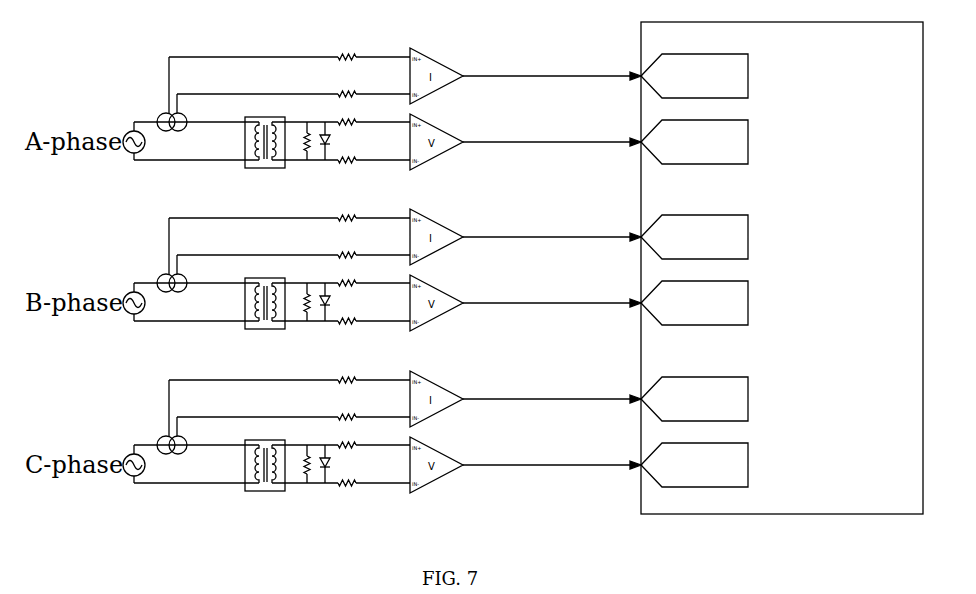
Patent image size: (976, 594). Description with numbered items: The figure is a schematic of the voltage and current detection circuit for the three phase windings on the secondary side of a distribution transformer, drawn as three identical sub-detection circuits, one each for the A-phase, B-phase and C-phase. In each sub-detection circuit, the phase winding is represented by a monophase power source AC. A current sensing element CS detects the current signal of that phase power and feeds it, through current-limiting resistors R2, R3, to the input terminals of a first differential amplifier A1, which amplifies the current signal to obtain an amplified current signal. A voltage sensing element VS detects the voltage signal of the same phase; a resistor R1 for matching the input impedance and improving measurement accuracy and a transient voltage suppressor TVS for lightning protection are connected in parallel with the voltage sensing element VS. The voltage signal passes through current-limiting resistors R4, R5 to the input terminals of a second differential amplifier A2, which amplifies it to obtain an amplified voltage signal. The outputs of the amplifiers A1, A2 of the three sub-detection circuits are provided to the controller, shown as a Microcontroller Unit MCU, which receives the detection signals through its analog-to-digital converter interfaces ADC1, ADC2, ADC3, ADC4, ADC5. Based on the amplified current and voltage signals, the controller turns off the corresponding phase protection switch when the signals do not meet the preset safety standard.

The AC power source AC is at (142, 302).
The current sensing element CS is at (165, 255).
The voltage sensing element VS is at (255, 297).
The resistor R1 is at (300, 302).
The resistor R2 is at (289, 213).
The resistor R3 is at (293, 250).
The resistor R4 is at (341, 278).
The resistor R5 is at (341, 329).
The transient voltage suppressor TVS is at (334, 302).
The first differential amplifier A1 is at (525, 237).
The second differential amplifier A2 is at (525, 303).
The analog-to-digital converter 1 ADC1 is at (694, 76).
The analog-to-digital converter 2 ADC2 is at (694, 142).
The analog-to-digital converter 3 ADC3 is at (694, 237).
The analog-to-digital converter 4 ADC4 is at (694, 351).
The analog-to-digital converter 5 ADC5 is at (694, 465).
The Microcontroller Unit MCU is at (782, 268).